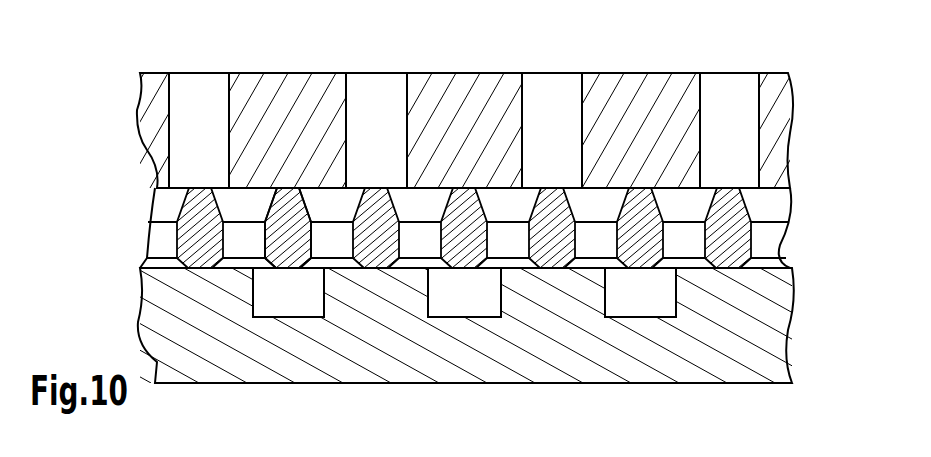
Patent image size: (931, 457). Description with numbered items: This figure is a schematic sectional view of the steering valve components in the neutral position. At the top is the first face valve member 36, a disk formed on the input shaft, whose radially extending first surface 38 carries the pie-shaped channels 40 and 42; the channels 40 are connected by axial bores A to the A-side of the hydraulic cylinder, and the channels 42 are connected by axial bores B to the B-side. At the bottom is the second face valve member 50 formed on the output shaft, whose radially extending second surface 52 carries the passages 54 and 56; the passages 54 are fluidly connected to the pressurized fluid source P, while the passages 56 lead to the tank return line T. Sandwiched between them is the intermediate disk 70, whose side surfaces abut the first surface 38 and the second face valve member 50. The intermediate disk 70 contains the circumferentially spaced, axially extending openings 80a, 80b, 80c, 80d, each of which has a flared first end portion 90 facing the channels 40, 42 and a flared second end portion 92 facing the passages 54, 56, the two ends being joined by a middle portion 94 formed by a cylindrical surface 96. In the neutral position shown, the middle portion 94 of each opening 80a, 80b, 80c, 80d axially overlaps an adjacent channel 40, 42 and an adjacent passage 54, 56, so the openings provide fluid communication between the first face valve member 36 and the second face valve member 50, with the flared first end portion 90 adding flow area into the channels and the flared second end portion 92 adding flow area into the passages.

The first face valve member 36 is at (690, 72).
The first surface 38 is at (153, 203).
The channel 40 is at (183, 80).
The channel 42 is at (368, 80).
The second face valve member 50 is at (773, 384).
The second surface 52 is at (783, 266).
The passage 54 is at (287, 313).
The passage 56 is at (483, 312).
The intermediate disk 70 is at (736, 230).
The opening 80a is at (507, 228).
The opening 80b is at (254, 207).
The opening 80c is at (330, 230).
The opening 80d is at (423, 230).
The flared first end portion 90 is at (237, 205).
The flared second end portion 92 is at (237, 266).
The middle portion 94 is at (237, 238).
The cylindrical surface 96 is at (263, 243).